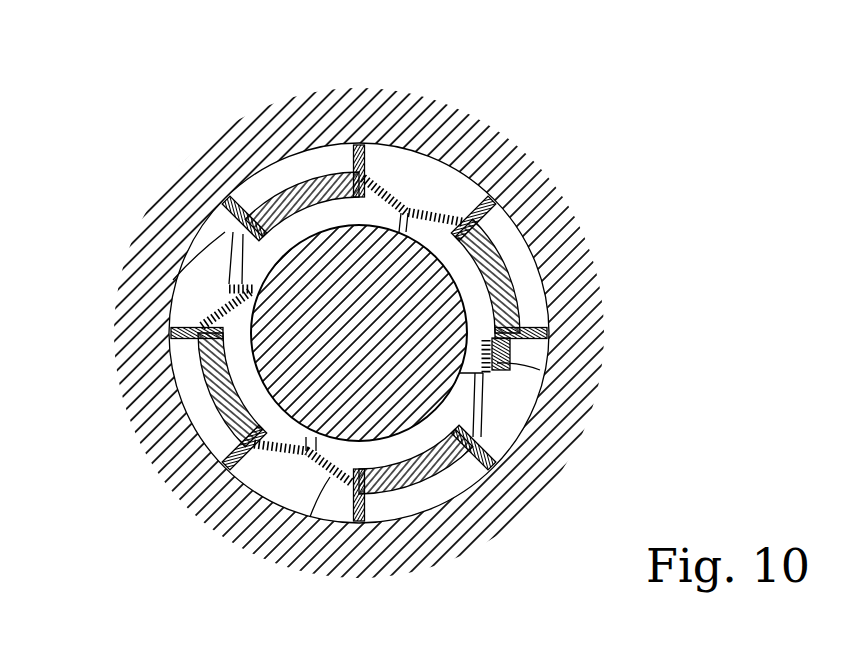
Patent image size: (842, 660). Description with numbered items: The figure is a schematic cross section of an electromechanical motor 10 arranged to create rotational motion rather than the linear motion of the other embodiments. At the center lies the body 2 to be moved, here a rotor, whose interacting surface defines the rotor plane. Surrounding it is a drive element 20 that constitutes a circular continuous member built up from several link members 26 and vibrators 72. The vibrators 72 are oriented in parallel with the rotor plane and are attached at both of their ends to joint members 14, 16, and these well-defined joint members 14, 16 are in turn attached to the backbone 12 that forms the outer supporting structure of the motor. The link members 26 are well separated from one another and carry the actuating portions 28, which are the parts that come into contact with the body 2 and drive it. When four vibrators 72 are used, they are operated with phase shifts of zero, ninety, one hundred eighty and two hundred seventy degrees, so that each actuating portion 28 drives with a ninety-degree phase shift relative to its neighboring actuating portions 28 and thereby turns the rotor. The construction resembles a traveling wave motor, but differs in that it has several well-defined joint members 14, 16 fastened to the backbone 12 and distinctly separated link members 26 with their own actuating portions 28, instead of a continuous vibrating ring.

The electric motor 10 is at (364, 333).
The backbone 12 is at (476, 133).
The body to be moved 2 is at (530, 362).
The drive element 20 is at (497, 238).
The link members 26 is at (392, 195).
The vibrators 72 is at (252, 207).
The joint members 14 is at (356, 164).
The joint members 16 is at (458, 218).
The actuating portions 28 is at (278, 262).